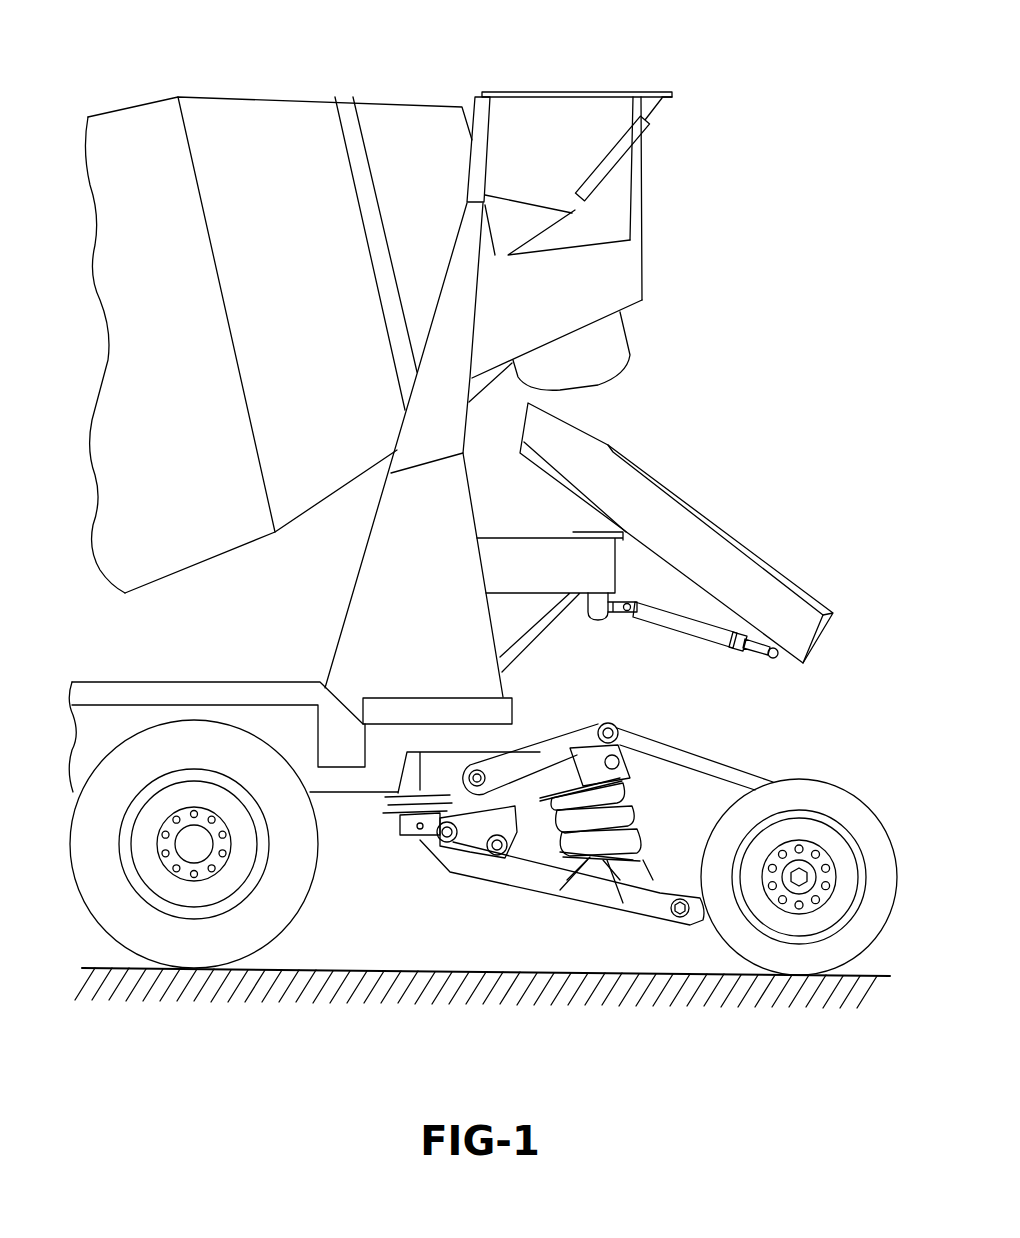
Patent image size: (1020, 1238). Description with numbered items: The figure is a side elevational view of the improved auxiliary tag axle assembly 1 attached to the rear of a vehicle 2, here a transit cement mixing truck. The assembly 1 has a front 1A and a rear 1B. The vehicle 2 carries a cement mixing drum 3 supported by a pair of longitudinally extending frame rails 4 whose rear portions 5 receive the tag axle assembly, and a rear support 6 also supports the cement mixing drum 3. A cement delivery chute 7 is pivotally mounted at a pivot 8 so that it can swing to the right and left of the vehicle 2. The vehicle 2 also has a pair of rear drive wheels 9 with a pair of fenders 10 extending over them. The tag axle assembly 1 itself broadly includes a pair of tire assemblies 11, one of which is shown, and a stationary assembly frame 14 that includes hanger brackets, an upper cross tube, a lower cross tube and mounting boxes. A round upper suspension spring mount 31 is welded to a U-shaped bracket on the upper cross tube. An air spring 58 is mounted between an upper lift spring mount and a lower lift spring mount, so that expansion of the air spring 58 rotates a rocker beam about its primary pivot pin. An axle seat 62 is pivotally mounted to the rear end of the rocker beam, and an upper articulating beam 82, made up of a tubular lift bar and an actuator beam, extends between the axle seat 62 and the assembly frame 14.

The auxiliary tag axle assembly 1 is at (712, 746).
The front 1A is at (410, 868).
The rear 1B is at (763, 763).
The vehicle 2 is at (458, 82).
The cement mixing drum 3 is at (275, 108).
The frame rails 4 is at (302, 745).
The rear portions 5 is at (443, 735).
The rear support 6 is at (378, 552).
The cement delivery chute 7 is at (653, 497).
The pivot 8 is at (599, 623).
The rear drive wheels 9 is at (277, 918).
The fenders 10 is at (355, 735).
The tire assemblies 11 is at (835, 795).
The assembly frame 14 is at (418, 740).
The upper suspension spring mount 31 is at (553, 797).
The air spring 58 is at (385, 803).
The axle seat 62 is at (687, 926).
The upper articulating beam 82 is at (660, 741).